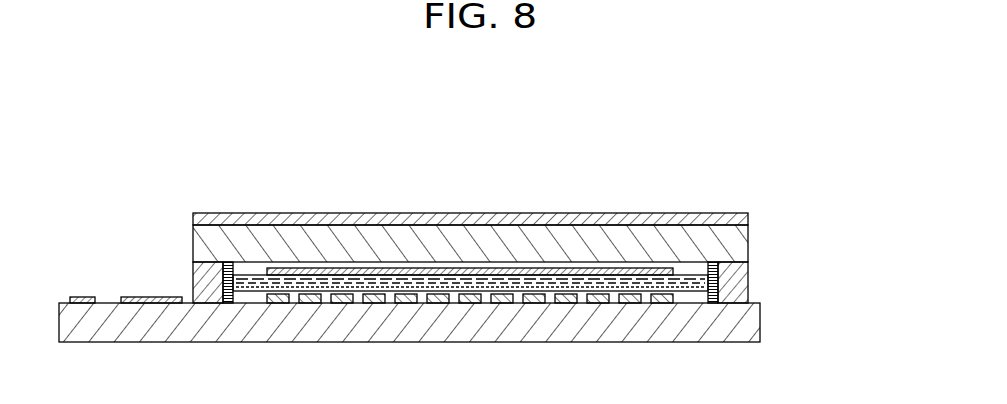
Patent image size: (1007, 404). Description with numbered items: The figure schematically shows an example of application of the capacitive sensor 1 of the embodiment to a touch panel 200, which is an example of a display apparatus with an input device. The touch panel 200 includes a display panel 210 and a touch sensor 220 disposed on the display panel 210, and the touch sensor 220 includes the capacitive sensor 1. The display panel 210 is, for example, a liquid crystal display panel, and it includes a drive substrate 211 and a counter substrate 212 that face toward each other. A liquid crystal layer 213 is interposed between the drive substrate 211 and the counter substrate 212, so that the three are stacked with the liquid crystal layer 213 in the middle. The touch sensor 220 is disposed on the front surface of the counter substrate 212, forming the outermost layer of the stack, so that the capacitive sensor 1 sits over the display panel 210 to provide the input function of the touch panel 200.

The touch panel 200 is at (473, 205).
The display panel 210 is at (473, 284).
The drive substrate 211 is at (752, 320).
The counter substrate 212 is at (737, 242).
The liquid crystal layer 213 is at (712, 283).
The touch sensor 220 is at (526, 197).
The capacitive sensor 1 is at (748, 214).